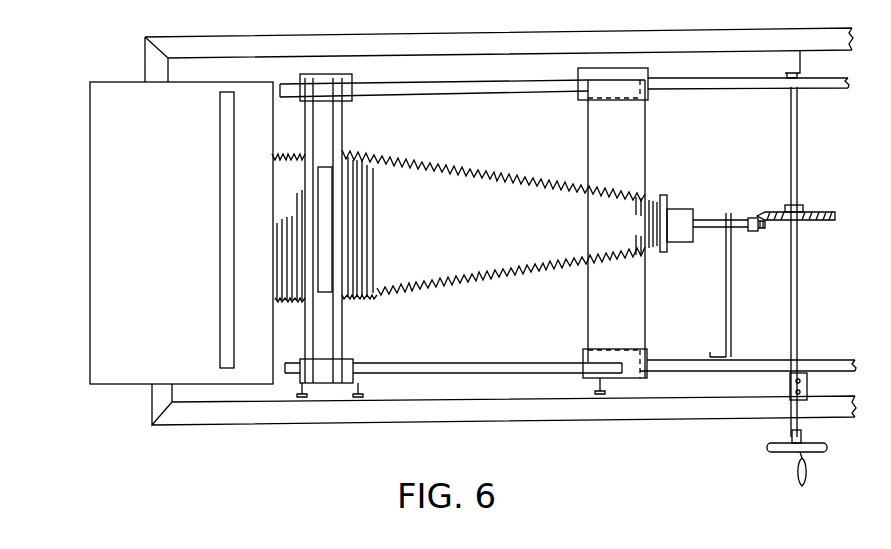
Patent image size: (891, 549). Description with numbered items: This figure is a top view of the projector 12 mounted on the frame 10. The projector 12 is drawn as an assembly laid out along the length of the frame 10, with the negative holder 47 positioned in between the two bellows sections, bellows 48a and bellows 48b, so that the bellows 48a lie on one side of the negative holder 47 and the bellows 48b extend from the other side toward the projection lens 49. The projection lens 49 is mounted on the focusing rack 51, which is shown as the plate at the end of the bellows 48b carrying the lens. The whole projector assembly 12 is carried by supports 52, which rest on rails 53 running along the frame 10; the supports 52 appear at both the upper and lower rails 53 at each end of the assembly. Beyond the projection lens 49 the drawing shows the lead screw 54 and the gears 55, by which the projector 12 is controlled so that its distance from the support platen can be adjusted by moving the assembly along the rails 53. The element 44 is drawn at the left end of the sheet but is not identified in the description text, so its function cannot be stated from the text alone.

The frame 10 is at (223, 47).
The projector 12 is at (468, 240).
The end panel 44 is at (222, 292).
The negative holder 47 is at (323, 176).
The bellows 48a is at (288, 300).
The bellows 48b is at (457, 270).
The projection lens 49 is at (681, 233).
The focusing rack 51 is at (633, 303).
The supports 52 is at (324, 73).
The rails 53 is at (478, 93).
The lead screw 54 is at (739, 226).
The gears 55 is at (773, 213).